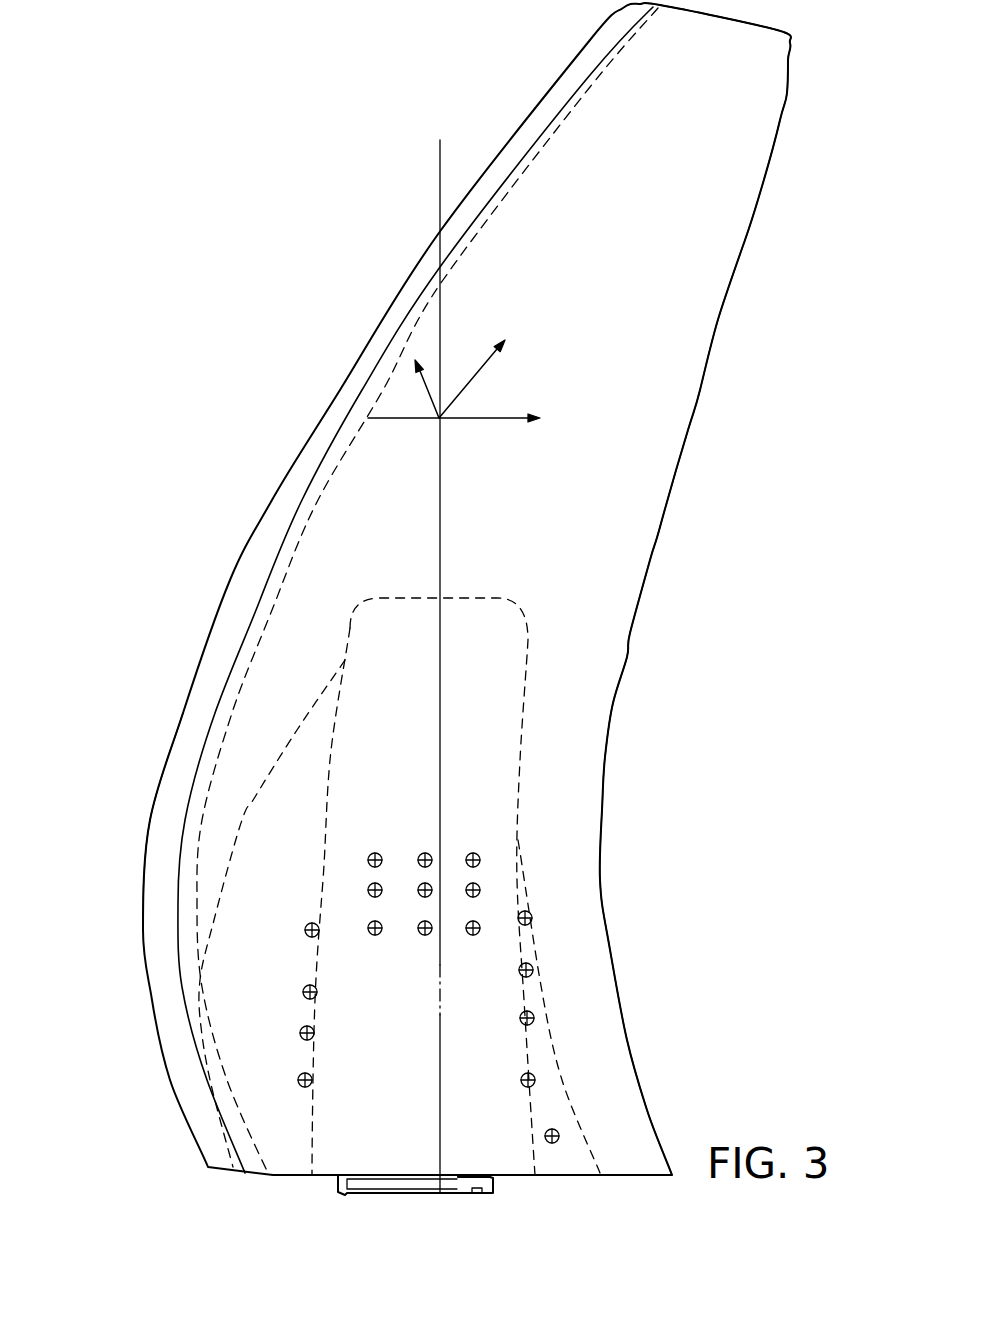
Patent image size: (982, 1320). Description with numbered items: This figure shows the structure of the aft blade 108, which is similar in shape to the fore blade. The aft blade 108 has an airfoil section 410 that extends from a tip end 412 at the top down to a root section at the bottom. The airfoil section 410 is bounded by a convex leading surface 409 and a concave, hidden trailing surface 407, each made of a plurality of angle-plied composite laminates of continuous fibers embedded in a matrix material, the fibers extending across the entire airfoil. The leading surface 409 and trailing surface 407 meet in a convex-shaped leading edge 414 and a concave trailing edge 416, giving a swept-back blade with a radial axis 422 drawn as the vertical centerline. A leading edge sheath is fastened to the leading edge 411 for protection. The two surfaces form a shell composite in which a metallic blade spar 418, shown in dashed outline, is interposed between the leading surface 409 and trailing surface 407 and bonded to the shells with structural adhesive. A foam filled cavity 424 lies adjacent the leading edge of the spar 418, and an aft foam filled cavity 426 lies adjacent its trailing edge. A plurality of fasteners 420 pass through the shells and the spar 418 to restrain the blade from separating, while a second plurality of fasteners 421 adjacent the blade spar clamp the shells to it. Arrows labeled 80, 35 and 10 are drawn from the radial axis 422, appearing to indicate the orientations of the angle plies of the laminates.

The aft blade 108 is at (471, 40).
The tip end 412 is at (782, 28).
The airfoil section 410 is at (697, 218).
The trailing surface 407 is at (688, 438).
The leading surface 409 is at (630, 505).
The blade spar 418 is at (528, 698).
The trailing edge 416 is at (610, 935).
The aft foam filled cavity 426 is at (575, 1118).
The leading edge 414 is at (230, 587).
The leading edge 411 is at (167, 870).
The foam filled cavity 424 is at (200, 1040).
The radial axis 422 is at (440, 1010).
The fasteners 420 is at (472, 883).
The fasteners 421 is at (312, 1079).
The angle arrow 80 is at (470, 422).
The angle arrow 35 is at (487, 373).
The angle arrow - 10 is at (422, 375).